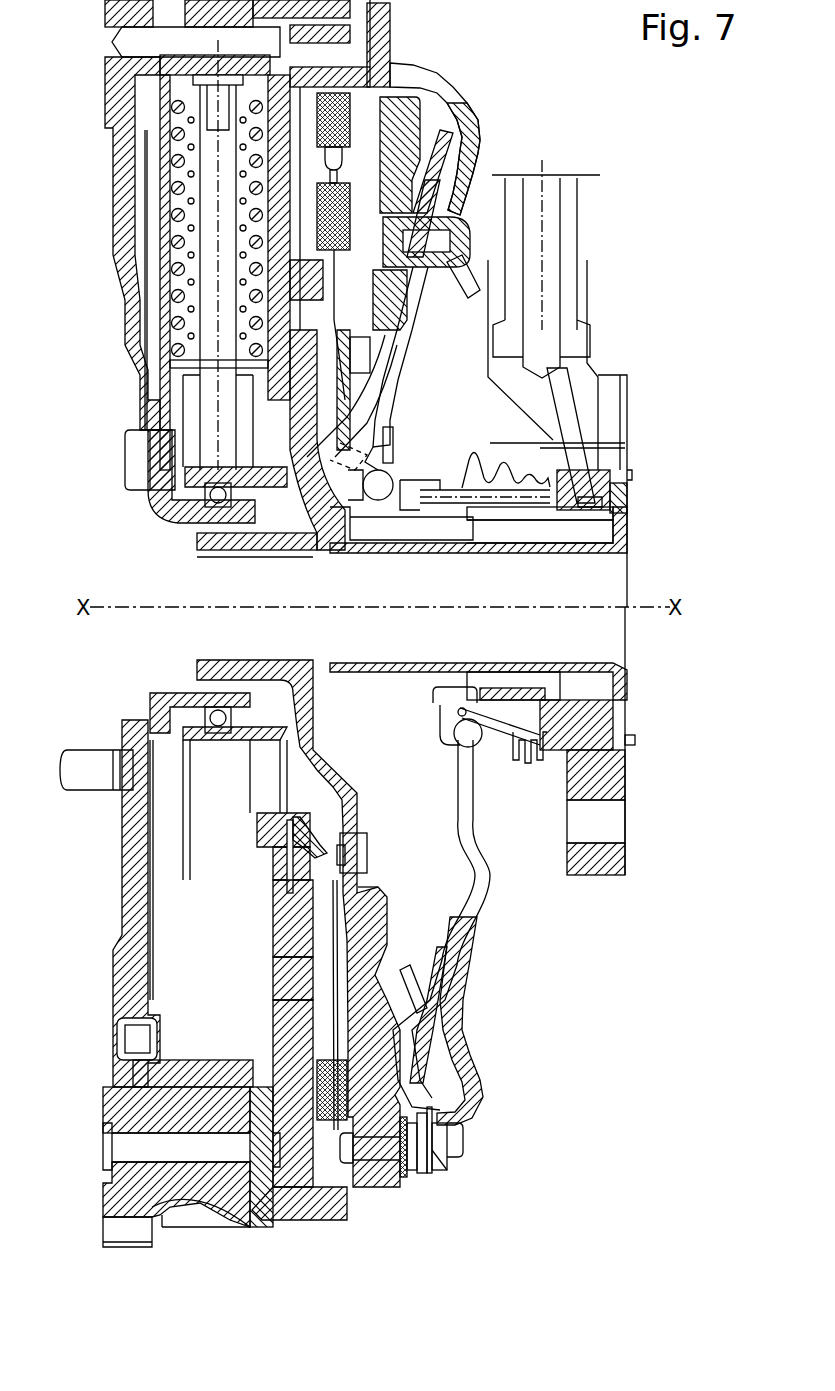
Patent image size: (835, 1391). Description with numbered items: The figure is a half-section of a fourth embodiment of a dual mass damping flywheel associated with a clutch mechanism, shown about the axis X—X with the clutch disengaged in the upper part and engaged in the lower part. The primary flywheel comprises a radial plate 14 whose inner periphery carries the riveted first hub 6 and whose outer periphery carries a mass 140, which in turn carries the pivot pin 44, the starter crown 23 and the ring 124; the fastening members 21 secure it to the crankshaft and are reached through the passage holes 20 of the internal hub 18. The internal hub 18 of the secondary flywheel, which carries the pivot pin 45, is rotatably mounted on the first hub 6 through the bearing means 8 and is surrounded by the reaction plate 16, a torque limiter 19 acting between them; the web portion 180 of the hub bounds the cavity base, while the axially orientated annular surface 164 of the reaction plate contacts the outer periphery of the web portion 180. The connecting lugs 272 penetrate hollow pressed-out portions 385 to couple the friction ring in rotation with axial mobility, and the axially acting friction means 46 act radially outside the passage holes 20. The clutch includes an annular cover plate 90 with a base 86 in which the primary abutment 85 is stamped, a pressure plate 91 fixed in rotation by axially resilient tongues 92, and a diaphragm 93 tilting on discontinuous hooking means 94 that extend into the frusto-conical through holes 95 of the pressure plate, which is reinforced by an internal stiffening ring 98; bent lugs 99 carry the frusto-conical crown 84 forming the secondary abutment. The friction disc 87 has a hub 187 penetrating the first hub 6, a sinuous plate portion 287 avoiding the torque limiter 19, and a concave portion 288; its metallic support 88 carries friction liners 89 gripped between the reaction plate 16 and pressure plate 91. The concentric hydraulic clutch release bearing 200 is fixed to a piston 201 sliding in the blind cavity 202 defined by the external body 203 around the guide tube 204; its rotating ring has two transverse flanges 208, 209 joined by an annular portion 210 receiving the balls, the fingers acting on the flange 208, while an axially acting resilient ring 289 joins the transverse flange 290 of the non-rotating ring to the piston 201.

The first hub 6 is at (165, 518).
The bearing means 8 is at (197, 496).
The radial plate 14 is at (125, 825).
The reaction plate 16 is at (280, 994).
The internal hub 18 is at (140, 447).
The torque limiter 19 is at (360, 336).
The passage holes 20 is at (253, 753).
The fastening members 21 is at (85, 750).
The starter crown 23 is at (105, 1200).
The pivot pin 44 is at (140, 45).
The pivot pin 45 is at (140, 385).
The axially acting friction means 46 is at (140, 930).
The frusto-conical crown 84 is at (418, 975).
The primary abutment 85 is at (440, 218).
The base of the cover plate 86 is at (473, 1033).
The friction disc 87 is at (380, 856).
The metallic support 88 is at (340, 912).
The friction liners 89 is at (350, 120).
The cover plate 90 is at (483, 1082).
The pressure plate 91 is at (413, 110).
The axially resilient tongues 92 is at (403, 1180).
The diaphragm 93 is at (477, 870).
The hooking means 94 is at (437, 280).
The through holes 95 is at (355, 245).
The internal stiffening ring 98 is at (365, 892).
The lugs 99 is at (460, 253).
The ring 124 is at (347, 1207).
The mass 140 is at (105, 1110).
The axially orientated annular surface 164 is at (270, 950).
The web portion 180 is at (273, 895).
The hub of the friction disc 187 is at (197, 545).
The clutch release bearing 200 is at (413, 457).
The piston 201 is at (533, 683).
The blind cavity 202 is at (563, 533).
The external body 203 is at (635, 742).
The guide tube 204 is at (513, 553).
The transverse flange 208 is at (393, 437).
The transverse flange 209 is at (353, 507).
The annular portion 210 is at (453, 753).
The transverse connecting lug 272 is at (290, 864).
The plate portion 287 is at (412, 364).
The concave portion 288 is at (293, 763).
The axially acting resilient ring 289 is at (433, 695).
The transverse flange 290 is at (440, 722).
The hollow pressed-out portions 385 is at (268, 832).